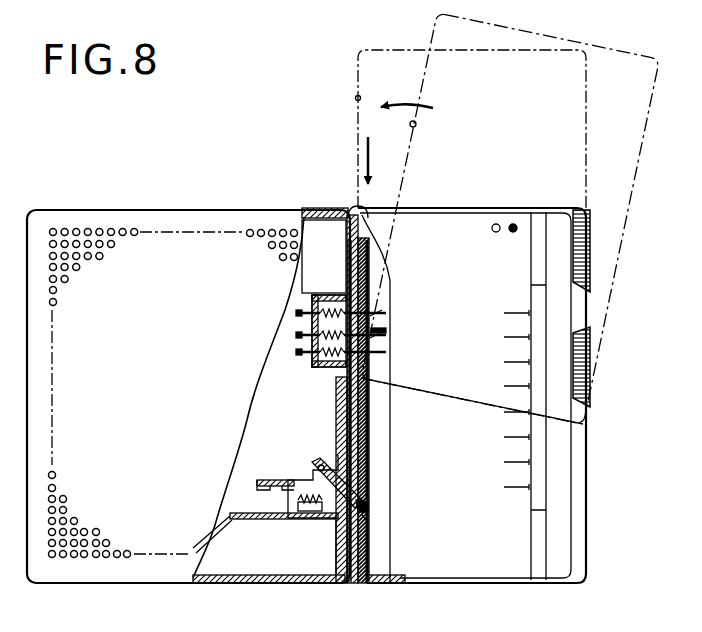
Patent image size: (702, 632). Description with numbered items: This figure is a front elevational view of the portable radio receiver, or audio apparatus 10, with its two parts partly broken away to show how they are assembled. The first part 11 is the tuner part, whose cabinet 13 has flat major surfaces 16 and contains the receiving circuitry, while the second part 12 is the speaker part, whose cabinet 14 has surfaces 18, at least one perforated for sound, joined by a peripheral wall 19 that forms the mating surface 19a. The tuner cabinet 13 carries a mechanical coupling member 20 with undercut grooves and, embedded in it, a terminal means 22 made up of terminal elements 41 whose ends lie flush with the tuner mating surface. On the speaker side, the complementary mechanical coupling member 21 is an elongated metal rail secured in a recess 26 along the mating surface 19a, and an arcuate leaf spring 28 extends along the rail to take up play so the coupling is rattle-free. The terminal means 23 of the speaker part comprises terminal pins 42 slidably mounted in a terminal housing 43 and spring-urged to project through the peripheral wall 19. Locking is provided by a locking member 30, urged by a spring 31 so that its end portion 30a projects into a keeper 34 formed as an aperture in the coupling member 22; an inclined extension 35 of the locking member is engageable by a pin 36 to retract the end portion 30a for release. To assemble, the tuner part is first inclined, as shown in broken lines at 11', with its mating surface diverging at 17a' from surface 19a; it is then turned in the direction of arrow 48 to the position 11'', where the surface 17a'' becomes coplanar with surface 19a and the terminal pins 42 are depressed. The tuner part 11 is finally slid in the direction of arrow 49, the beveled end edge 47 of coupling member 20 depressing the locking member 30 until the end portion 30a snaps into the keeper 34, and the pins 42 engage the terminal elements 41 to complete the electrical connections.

The audio apparatus 10 is at (268, 140).
The first part 11 is at (504, 395).
The tuner part in inclined position 11' is at (510, 219).
The tuner part in coplanar position 11'' is at (472, 109).
The second part 12 is at (118, 195).
The cabinet 13 is at (588, 505).
The cabinet 14 is at (203, 208).
The major surfaces 16 is at (448, 556).
The mating surface of tuner cabinet in inclined position 17a' is at (444, 128).
The mating surface of tuner cabinet in coplanar position 17a'' is at (327, 75).
The surfaces 18 is at (145, 557).
The peripheral wall 19 is at (214, 577).
The mating surface 19a is at (352, 210).
The mechanical coupling member 20 is at (372, 458).
The mechanical coupling member 21 is at (340, 537).
The terminal means 22 is at (388, 331).
The terminal means 23 is at (306, 300).
The recess 26 is at (340, 580).
The arcuate leaf spring 28 is at (372, 437).
The locking member 30 is at (330, 511).
The end portion 30a is at (368, 520).
The spring 31 is at (300, 492).
The keeper 34 is at (370, 505).
The extension 35 is at (328, 466).
The pin 36 is at (312, 466).
The terminal elements 41 is at (372, 318).
The terminal pins 42 is at (300, 340).
The terminal housing 43 is at (325, 368).
The beveled end edge 47 is at (359, 578).
The arrow 48 is at (405, 104).
The arrow 49 is at (369, 160).